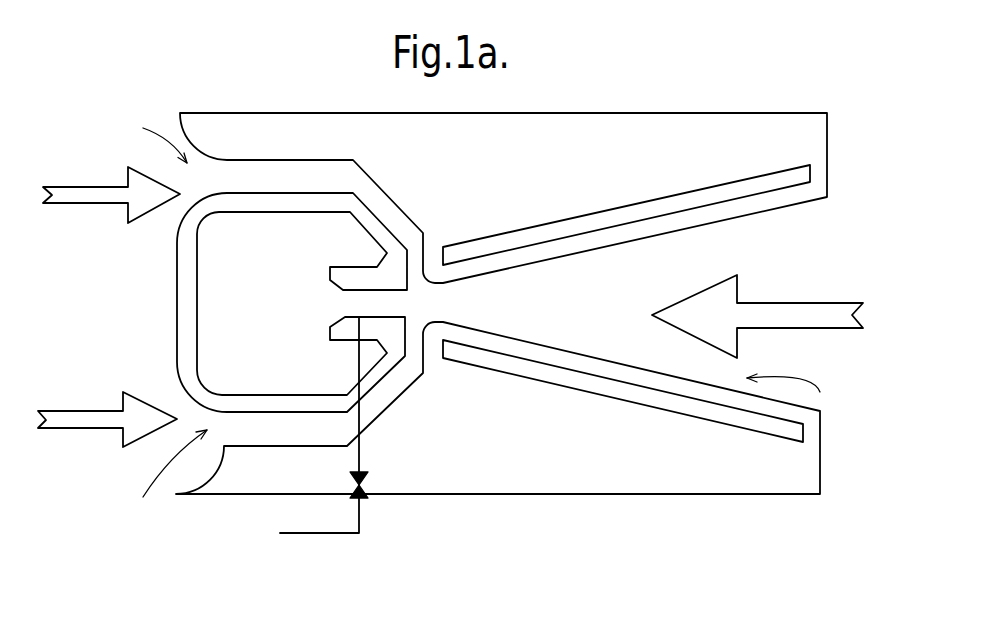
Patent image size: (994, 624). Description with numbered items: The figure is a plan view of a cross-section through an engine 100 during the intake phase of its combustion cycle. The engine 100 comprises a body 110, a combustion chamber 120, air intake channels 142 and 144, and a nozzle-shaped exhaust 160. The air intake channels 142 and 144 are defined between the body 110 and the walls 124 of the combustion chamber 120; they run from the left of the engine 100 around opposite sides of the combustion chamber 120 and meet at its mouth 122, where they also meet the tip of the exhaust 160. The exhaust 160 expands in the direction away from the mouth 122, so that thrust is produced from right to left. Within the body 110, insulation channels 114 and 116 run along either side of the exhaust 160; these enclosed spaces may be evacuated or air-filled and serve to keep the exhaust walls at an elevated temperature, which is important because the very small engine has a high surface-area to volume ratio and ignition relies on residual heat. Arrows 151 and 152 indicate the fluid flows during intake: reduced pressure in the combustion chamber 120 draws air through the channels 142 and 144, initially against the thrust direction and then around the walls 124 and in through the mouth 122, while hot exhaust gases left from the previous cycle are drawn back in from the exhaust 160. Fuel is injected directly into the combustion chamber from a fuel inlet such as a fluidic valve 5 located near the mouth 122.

The engine 100 is at (483, 281).
The body 110 is at (747, 113).
The insulation channel 114 is at (783, 180).
The insulation channel 116 is at (730, 417).
The combustion chamber 120 is at (228, 375).
The mouth 122 is at (383, 302).
The walls 124 is at (257, 203).
The air intake channel 142 is at (146, 140).
The air intake channel 144 is at (165, 475).
The arrow 151 is at (83, 187).
The arrow 152 is at (807, 303).
The exhaust 160 is at (798, 391).
The fluidic valve 5 is at (370, 483).